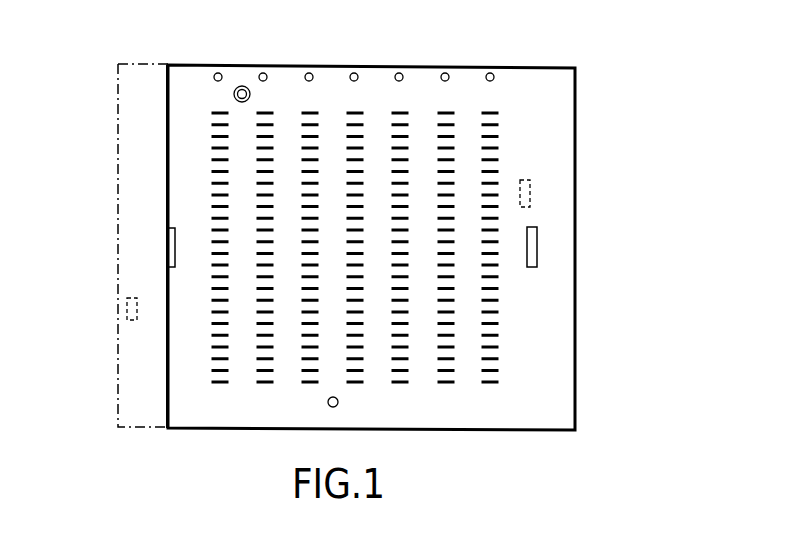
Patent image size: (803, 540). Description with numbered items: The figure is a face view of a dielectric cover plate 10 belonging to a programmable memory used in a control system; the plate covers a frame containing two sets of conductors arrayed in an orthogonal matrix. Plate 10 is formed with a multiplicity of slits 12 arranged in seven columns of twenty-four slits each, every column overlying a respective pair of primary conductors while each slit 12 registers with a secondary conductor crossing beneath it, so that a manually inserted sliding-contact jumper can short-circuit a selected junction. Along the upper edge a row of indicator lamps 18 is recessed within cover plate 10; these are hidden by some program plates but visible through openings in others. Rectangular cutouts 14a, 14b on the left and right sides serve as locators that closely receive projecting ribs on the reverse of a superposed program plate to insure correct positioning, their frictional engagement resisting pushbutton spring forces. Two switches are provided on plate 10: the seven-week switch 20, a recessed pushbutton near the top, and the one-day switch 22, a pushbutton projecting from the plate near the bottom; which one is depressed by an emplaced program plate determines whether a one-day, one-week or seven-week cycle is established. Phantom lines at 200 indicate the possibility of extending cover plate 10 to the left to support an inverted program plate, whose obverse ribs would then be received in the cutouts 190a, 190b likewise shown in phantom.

The dielectric cover plate 10 is at (546, 384).
The slits 12 is at (497, 113).
The rectangular cutout 14a is at (167, 244).
The rectangular cutout 14b is at (537, 245).
The indicator lamps 18 is at (308, 73).
The 7-week switch 20 is at (242, 86).
The 1-day switch 22 is at (328, 404).
The cutout 190a is at (127, 307).
The cutout 190b is at (533, 199).
The cover plate extension 200 is at (118, 368).